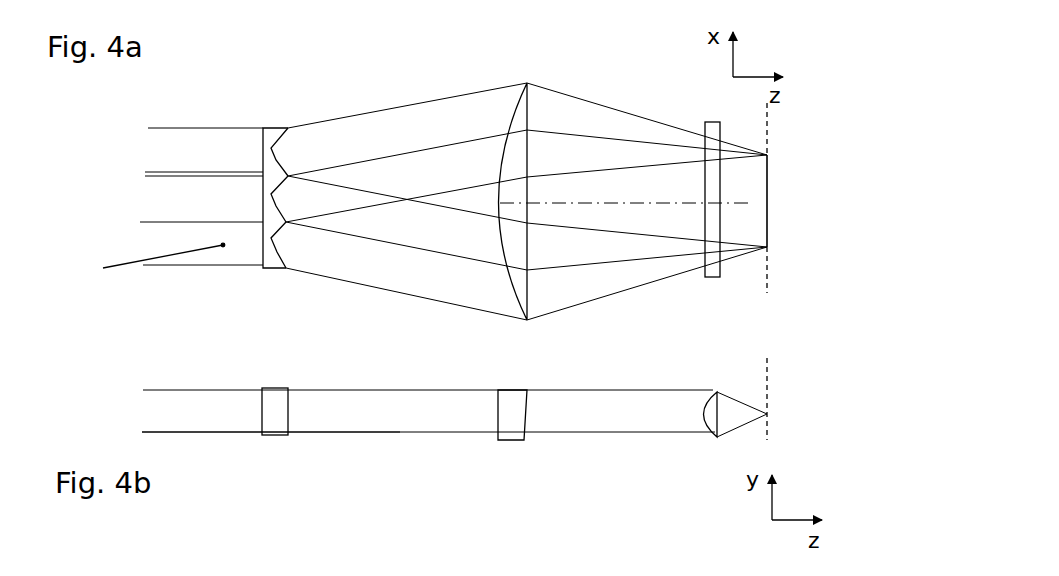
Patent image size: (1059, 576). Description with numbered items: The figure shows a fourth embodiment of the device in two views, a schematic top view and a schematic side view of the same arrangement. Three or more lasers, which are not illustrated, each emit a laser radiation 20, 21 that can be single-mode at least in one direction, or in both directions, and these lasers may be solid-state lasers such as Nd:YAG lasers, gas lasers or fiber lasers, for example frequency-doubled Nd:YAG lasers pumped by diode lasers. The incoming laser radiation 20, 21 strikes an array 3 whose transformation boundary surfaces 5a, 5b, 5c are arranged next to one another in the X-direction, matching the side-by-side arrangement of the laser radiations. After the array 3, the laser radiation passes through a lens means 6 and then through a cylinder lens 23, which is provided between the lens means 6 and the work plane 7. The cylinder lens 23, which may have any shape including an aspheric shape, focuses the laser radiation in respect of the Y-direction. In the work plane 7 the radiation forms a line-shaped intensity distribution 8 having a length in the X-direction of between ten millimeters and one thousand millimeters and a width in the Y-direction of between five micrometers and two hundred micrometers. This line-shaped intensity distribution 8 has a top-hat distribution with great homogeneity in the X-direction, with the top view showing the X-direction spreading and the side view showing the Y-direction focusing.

In FIG. 4A, the array 3 is at (331, 185).
In FIG. 4B, the array 3 is at (271, 439).
In FIG. 4A, the transformation boundary surface 5a is at (276, 156).
In FIG. 4A, the transformation boundary surface 5b is at (272, 195).
In FIG. 4A, the transformation boundary surface 5c is at (272, 238).
In FIG. 4A, the lens means 6 is at (525, 322).
In FIG. 4B, the lens means 6 is at (498, 412).
In FIG. 4A, the work plane 7 is at (767, 288).
In FIG. 4A, the line-shaped intensity distribution 8 is at (802, 235).
In FIG. 4B, the line-shaped intensity distribution 8 is at (809, 399).
In FIG. 4A, the laser radiation 20 is at (198, 153).
In FIG. 4B, the laser radiation 20 is at (212, 410).
In FIG. 4A, the laser radiation 21 is at (210, 198).
In FIG. 4A, the cylinder lens 23 is at (714, 277).
In FIG. 4B, the cylinder lens 23 is at (717, 390).